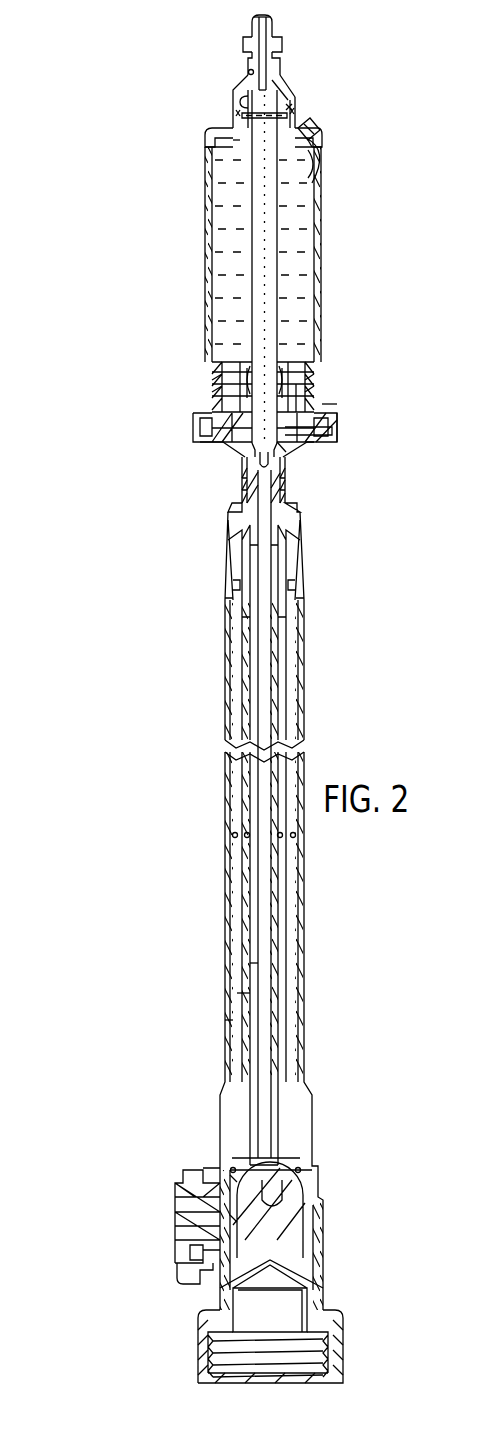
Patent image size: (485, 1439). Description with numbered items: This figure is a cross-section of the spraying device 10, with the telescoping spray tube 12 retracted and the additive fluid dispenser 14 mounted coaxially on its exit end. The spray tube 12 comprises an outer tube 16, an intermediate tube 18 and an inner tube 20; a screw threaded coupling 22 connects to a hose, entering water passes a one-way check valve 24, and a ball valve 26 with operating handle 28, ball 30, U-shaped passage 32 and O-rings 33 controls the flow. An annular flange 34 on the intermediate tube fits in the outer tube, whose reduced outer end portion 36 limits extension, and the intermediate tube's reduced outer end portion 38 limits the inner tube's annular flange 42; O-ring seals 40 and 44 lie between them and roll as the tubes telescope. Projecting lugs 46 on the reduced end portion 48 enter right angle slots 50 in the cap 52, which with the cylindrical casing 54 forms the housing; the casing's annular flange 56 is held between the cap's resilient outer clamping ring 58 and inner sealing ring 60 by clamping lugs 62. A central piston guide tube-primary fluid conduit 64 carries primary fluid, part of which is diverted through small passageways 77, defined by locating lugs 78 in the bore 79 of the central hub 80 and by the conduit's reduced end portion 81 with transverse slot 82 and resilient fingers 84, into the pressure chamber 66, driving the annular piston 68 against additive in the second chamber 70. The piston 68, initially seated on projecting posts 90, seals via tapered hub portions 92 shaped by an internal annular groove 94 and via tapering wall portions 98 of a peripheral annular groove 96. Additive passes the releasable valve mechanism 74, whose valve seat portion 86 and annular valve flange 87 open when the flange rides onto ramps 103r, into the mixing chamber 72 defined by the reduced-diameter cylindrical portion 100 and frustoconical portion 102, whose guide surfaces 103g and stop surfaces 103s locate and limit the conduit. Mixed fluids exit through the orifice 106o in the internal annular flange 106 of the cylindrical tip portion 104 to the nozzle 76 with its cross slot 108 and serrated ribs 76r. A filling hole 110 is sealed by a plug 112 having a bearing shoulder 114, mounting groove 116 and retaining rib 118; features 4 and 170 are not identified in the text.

The hollow needle bore 4 is at (315, 812).
The spraying device 10 is at (96, 446).
The telescoping spray tube assembly 12 is at (128, 610).
The additive fluid dispenser 14 is at (120, 302).
The outer plastic tube 16 is at (225, 1020).
The intermediate plastic tube 18 is at (237, 993).
The inner plastic tube 20 is at (250, 963).
The screw threaded coupling 22 is at (342, 1363).
The one-way plastic check valve 24 is at (290, 1272).
The ball valve 26 is at (162, 1202).
The operating handle 28 is at (195, 1280).
The ball 30 is at (300, 1182).
The U-shaped passage 32 is at (273, 1212).
The O-rings 33 is at (217, 1216).
The annular flange 34 is at (297, 583).
The outer end portion of outer tube 36 is at (297, 548).
The outer end portion of intermediate tube 38 is at (280, 565).
The O-ring seal 40 is at (220, 600).
The annular flange 42 is at (277, 587).
The O-ring seal 44 is at (222, 618).
The projecting lugs 46 is at (243, 485).
The reduced end portion 48 is at (293, 500).
The right angle slots 50 is at (233, 507).
The plastic cap 52 is at (378, 403).
The cylindrical outer plastic casing 54 is at (317, 258).
The annular flange 56 is at (202, 428).
The resilient outer clamping ring 58 is at (333, 417).
The inner sealing ring 60 is at (320, 403).
The clamping lugs 62 is at (197, 415).
The combination piston guide tube-primary fluid conduit 64 is at (277, 248).
The primary fluid pressure chamber 66 is at (213, 390).
The annular plastic piston 68 is at (220, 375).
The second chamber 70 is at (217, 283).
The mixing chamber 72 is at (267, 80).
The releasable valve mechanism 74 is at (122, 156).
The nozzle 76 is at (273, 26).
The serrated ribs 76r is at (245, 40).
The small passageways 77 is at (283, 460).
The locating lugs 78 is at (247, 463).
The bore 79 is at (293, 510).
The central hub 80 is at (288, 430).
The reduced end portion 81 is at (300, 447).
The transverse slot 82 is at (247, 383).
The resilient fingers 84 is at (203, 443).
The valve seat portion 86 is at (292, 108).
The annular valve flange 87 is at (240, 147).
The projecting posts 90 is at (323, 387).
The tapered hub portions 92 is at (250, 372).
The internal annular groove 94 is at (277, 372).
The annular groove 96 is at (207, 383).
The tapering wall portions 98 is at (317, 390).
The reduced-diameter cylindrical portion 100 is at (296, 98).
The frustoconical portion 102 is at (297, 92).
The guide surfaces 103g is at (243, 115).
The ramps 103r is at (213, 127).
The stop surfaces 103s is at (243, 103).
The casing cylindrical tip portion 104 is at (280, 67).
The internal annular flange 106 is at (248, 63).
The orifice 106o is at (247, 53).
The cross slot 108 is at (257, 14).
The filling hole 110 is at (315, 140).
The plastic plug 112 is at (318, 115).
The annular outer bearing shoulder 114 is at (317, 125).
The annular mounting groove 116 is at (318, 130).
The inner resilient annular retaining rib 118 is at (318, 180).
The inner cone 170 is at (285, 78).